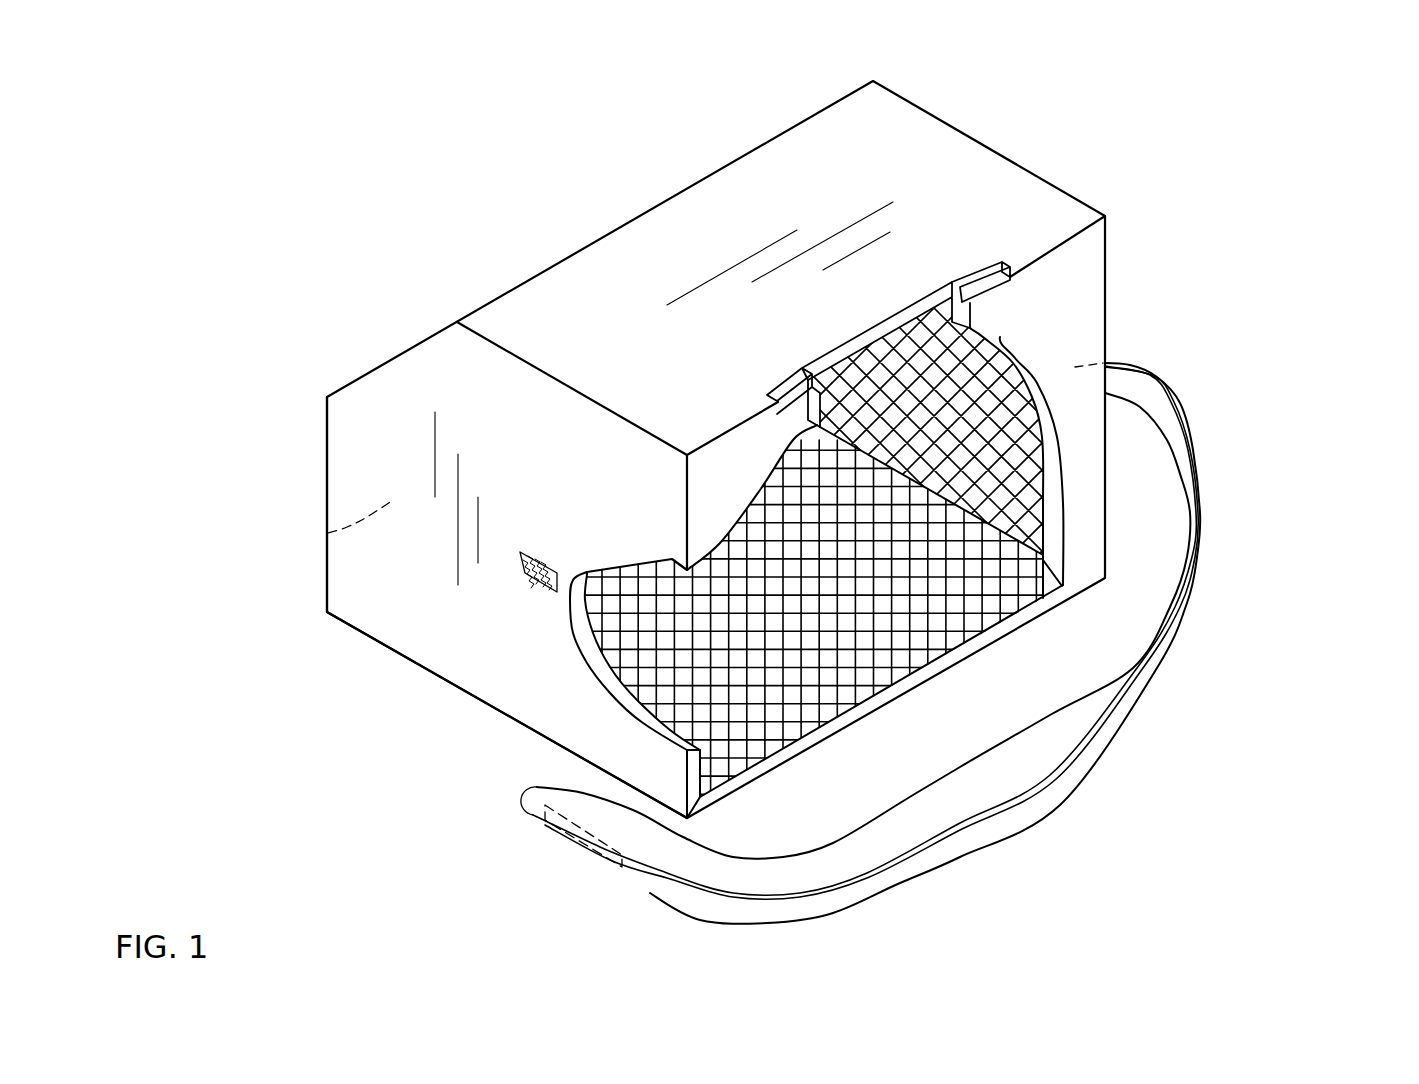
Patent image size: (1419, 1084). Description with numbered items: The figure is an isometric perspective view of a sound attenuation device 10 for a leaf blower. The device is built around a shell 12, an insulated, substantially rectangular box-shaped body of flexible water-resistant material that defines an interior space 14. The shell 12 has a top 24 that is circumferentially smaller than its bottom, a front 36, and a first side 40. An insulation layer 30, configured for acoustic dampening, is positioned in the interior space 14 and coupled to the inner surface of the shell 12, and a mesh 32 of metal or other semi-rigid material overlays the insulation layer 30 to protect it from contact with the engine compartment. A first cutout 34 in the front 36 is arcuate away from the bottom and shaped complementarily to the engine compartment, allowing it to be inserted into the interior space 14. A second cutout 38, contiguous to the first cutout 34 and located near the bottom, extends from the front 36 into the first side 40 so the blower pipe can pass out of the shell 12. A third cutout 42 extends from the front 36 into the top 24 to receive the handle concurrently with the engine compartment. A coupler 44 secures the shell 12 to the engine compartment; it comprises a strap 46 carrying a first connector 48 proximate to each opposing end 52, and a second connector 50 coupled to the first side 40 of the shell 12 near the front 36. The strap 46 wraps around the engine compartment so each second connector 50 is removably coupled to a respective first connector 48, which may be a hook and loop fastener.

The sound attenuation device 10 is at (388, 186).
The shell 12 is at (327, 463).
The interior space 14 is at (328, 533).
The top 24 is at (943, 163).
The third cutout 42 is at (882, 340).
The first cutout 34 is at (807, 497).
The insulation layer 30 is at (1030, 400).
The mesh 32 is at (1000, 337).
The front 36 is at (1075, 433).
The first side 40 is at (365, 587).
The second cutout 38 is at (615, 650).
The first connector 48 is at (520, 562).
The coupler 44 is at (643, 892).
The second connector 50 is at (593, 845).
The strap 46 is at (1088, 745).
The opposing end 52 is at (1060, 660).